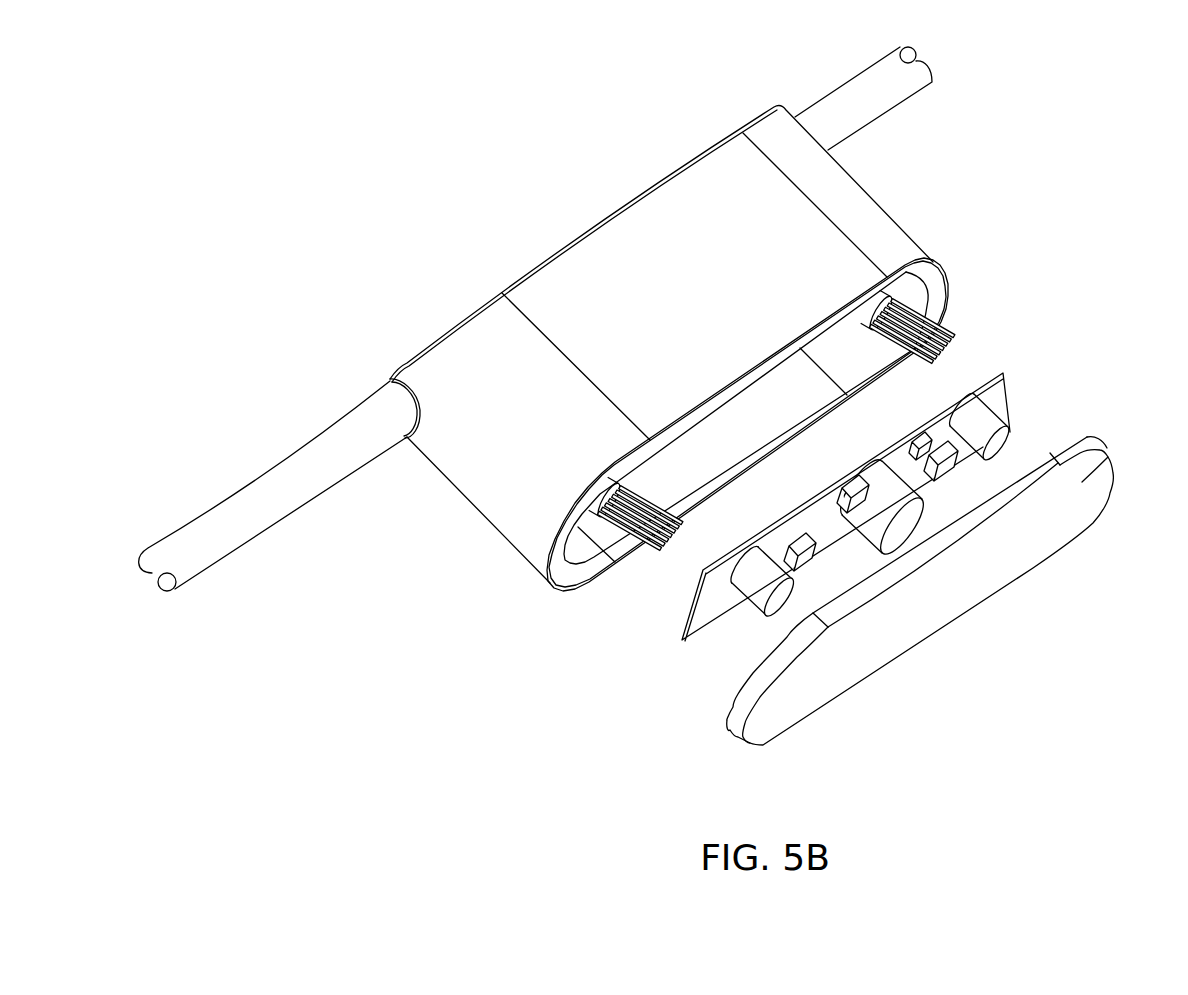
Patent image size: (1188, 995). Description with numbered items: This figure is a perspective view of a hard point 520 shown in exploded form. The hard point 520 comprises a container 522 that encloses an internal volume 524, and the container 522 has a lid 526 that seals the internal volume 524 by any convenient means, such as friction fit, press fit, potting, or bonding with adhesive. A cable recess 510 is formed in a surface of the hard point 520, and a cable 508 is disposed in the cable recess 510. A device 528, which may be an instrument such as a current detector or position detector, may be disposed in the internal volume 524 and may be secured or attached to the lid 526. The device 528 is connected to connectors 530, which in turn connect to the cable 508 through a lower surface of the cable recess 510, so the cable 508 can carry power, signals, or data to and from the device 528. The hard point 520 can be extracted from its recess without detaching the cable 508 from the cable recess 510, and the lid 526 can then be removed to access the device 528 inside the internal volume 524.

The cable 508 is at (223, 520).
The cable recess 510 is at (390, 383).
The hard point 520 is at (528, 232).
The container 522 is at (517, 553).
The internal volume 524 is at (740, 423).
The lid 526 is at (1107, 450).
The device 528 is at (1003, 372).
The connectors 530 is at (910, 292).